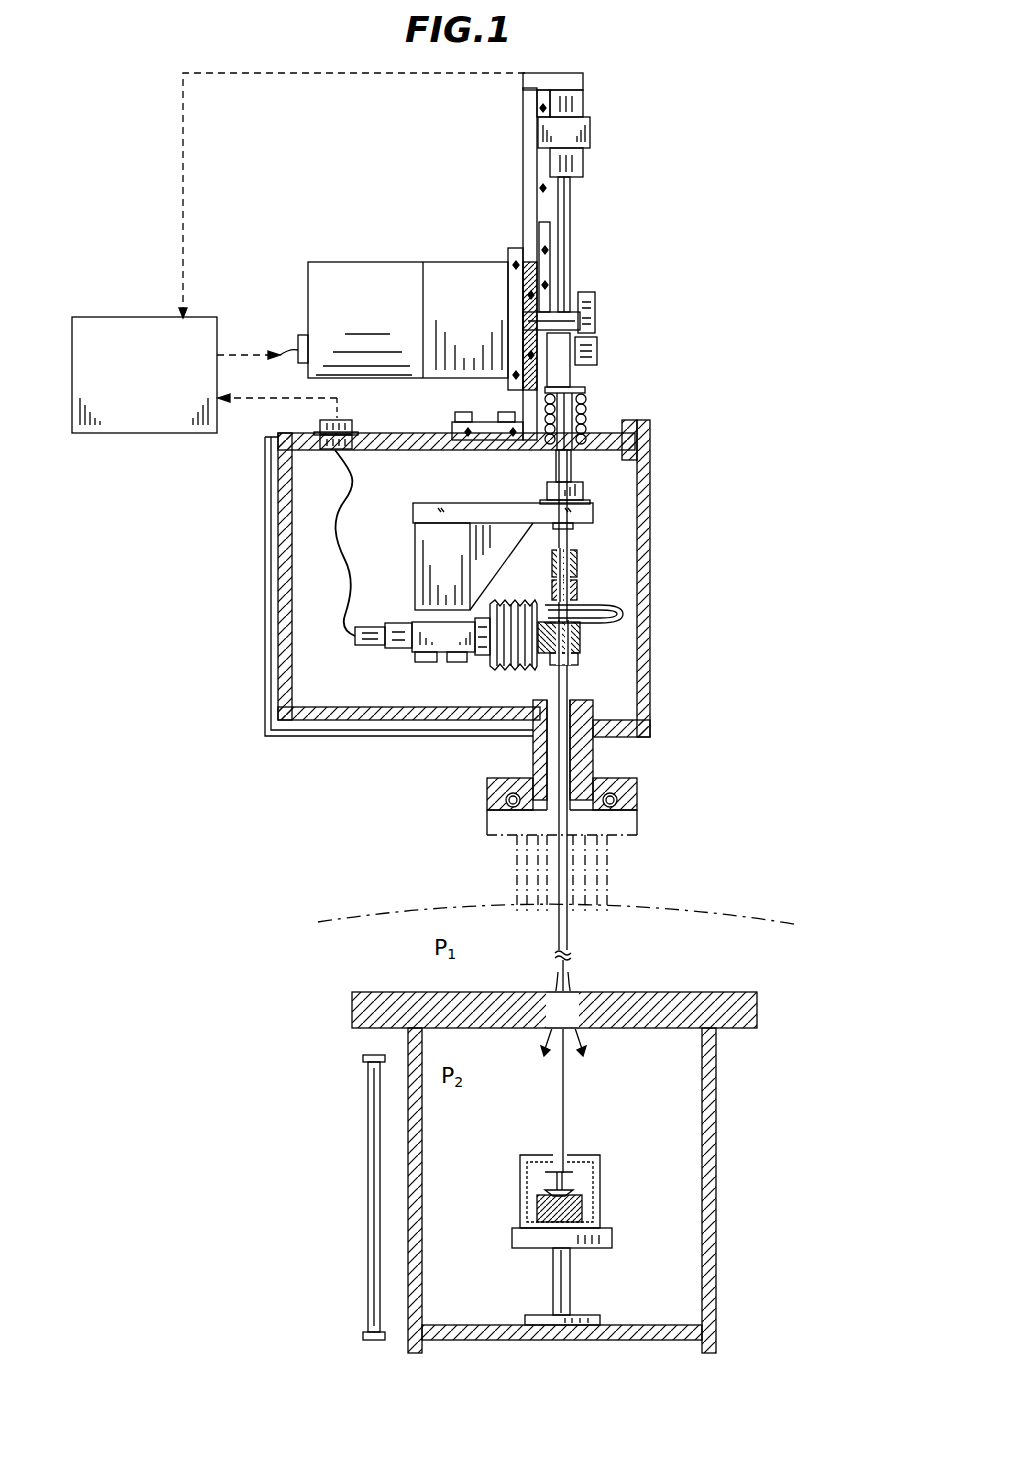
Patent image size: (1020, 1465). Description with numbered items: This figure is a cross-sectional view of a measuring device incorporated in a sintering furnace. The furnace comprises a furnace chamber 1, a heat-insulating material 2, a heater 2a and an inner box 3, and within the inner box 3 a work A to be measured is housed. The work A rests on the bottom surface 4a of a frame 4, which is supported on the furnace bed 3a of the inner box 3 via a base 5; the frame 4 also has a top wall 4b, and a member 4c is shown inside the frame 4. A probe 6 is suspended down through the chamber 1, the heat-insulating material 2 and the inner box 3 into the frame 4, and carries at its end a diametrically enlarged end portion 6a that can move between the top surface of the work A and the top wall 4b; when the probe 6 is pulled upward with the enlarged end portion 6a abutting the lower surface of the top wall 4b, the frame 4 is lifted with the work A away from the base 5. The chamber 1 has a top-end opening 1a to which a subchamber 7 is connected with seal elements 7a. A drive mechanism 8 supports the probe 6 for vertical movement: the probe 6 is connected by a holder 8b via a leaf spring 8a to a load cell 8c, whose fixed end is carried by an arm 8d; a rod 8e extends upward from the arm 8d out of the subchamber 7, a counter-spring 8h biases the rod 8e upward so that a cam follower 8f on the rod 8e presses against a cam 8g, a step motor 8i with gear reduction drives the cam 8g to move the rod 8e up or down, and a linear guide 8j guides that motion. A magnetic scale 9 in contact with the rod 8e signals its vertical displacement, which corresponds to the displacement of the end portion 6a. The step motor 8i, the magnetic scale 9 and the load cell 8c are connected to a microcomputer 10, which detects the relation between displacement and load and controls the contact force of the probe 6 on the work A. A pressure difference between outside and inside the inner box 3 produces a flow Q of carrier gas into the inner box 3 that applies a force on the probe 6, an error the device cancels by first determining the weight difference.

The furnace chamber 1 is at (745, 915).
The top-end opening 1a is at (637, 822).
The heat-insulating material 2 is at (682, 992).
The heater 2a is at (368, 1235).
The inner box 3 is at (716, 1080).
The furnace bed 3a is at (640, 1325).
The frame 4 is at (598, 1145).
The bottom surface 4a is at (583, 1210).
The top wall 4b is at (600, 1165).
The sample support 4c is at (563, 1158).
The base 5 is at (572, 1273).
The probe 6 is at (568, 970).
The enlarged end portion 6a is at (535, 1180).
The subchamber 7 is at (650, 500).
The seal elements 7a is at (596, 790).
The drive mechanism 8 is at (625, 385).
The leaf spring 8a is at (625, 612).
The holder 8b is at (580, 562).
The load cell 8c is at (493, 672).
The arm 8d is at (413, 560).
The rod 8e is at (585, 470).
The cam follower 8f is at (593, 363).
The cam 8g is at (592, 296).
The counter-spring 8h is at (590, 405).
The step motor 8i is at (372, 262).
The linear guide 8j is at (538, 222).
The magnetic scale 9 is at (583, 165).
The microcomputer 10 is at (177, 433).
The work A is at (520, 1205).
The gas flow Q is at (542, 1050).